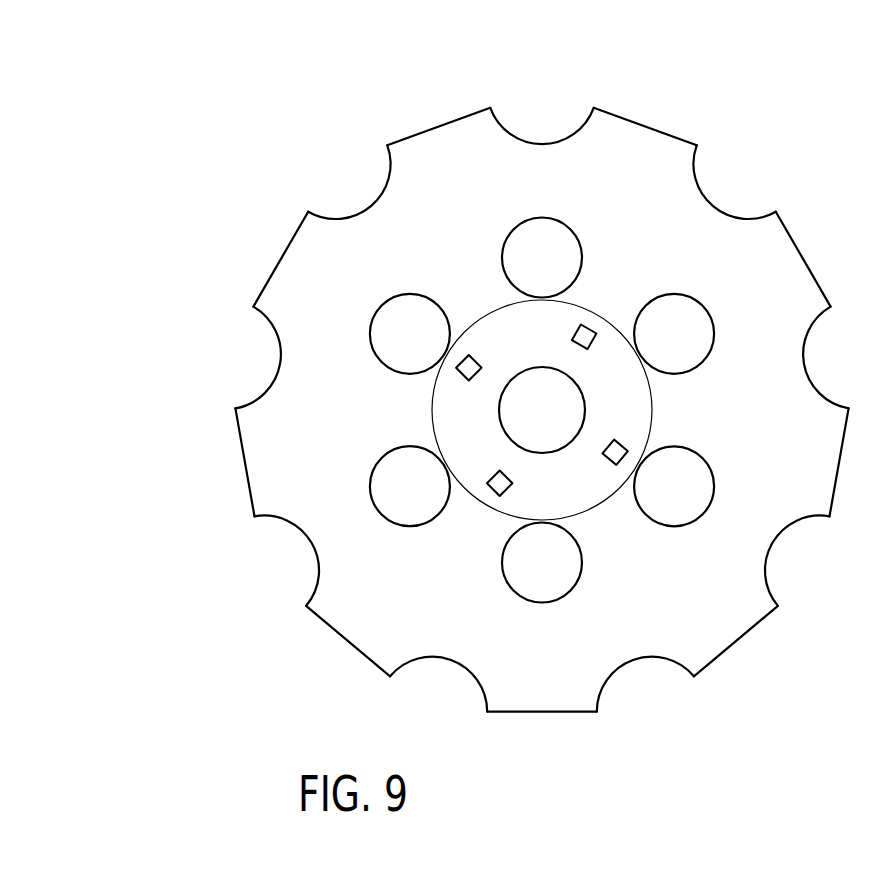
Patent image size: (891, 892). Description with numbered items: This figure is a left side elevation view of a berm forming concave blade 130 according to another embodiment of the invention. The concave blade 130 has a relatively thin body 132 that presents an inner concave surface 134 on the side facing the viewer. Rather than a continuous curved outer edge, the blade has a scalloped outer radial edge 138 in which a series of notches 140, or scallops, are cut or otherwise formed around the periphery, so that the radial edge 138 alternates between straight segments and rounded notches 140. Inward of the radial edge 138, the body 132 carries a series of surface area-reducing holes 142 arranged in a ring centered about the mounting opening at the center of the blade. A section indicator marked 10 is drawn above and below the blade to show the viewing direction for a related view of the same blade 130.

The section view indicator 10 is at (542, 35).
The concave blade 130 is at (248, 196).
The body 132 is at (266, 480).
The inner concave surface 134 is at (680, 628).
The outer radial edge 138 is at (647, 117).
The notches 140 is at (375, 217).
The surface area-reducing holes 142 is at (570, 245).